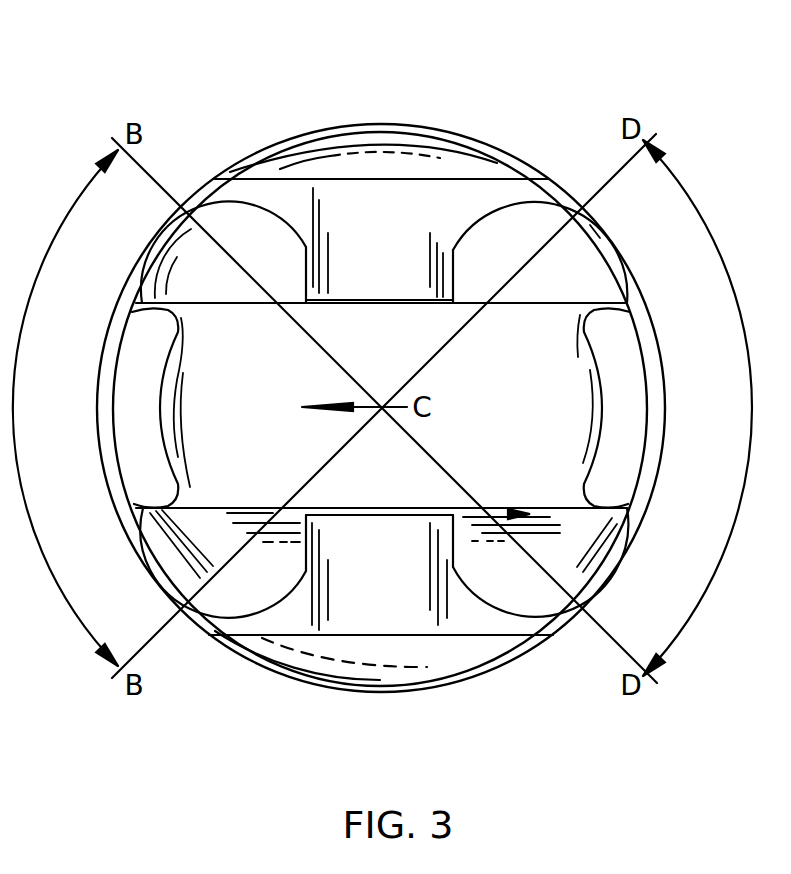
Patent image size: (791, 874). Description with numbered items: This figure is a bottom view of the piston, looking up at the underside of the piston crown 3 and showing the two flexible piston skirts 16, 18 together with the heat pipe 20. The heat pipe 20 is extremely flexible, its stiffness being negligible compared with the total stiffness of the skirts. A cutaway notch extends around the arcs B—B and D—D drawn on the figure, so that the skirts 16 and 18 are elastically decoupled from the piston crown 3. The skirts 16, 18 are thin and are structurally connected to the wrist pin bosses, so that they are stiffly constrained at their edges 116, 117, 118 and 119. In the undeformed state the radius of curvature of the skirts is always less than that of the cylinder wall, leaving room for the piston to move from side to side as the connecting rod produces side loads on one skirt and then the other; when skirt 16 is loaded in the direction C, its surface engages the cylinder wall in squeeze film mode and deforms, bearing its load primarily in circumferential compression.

The piston crown 3 is at (482, 277).
The flexible piston skirt 16 is at (136, 528).
The flexible piston skirt 18 is at (636, 534).
The heat pipe 20 is at (590, 358).
The edge 116 is at (197, 628).
The edge 117 is at (186, 207).
The edge 118 is at (568, 200).
The edge 119 is at (566, 608).